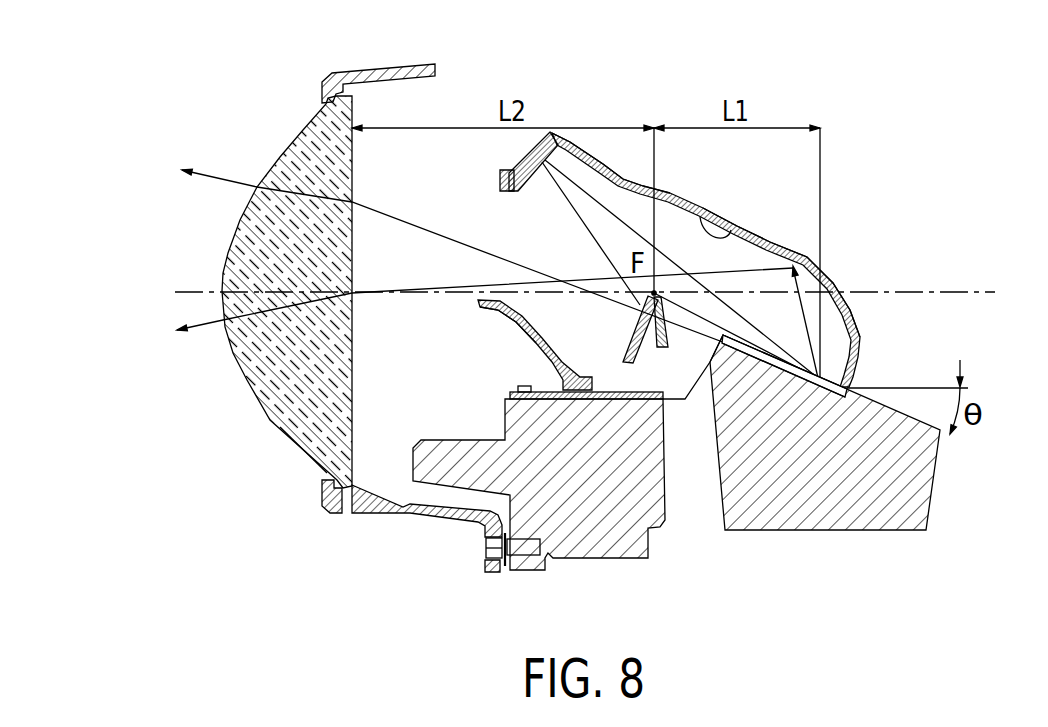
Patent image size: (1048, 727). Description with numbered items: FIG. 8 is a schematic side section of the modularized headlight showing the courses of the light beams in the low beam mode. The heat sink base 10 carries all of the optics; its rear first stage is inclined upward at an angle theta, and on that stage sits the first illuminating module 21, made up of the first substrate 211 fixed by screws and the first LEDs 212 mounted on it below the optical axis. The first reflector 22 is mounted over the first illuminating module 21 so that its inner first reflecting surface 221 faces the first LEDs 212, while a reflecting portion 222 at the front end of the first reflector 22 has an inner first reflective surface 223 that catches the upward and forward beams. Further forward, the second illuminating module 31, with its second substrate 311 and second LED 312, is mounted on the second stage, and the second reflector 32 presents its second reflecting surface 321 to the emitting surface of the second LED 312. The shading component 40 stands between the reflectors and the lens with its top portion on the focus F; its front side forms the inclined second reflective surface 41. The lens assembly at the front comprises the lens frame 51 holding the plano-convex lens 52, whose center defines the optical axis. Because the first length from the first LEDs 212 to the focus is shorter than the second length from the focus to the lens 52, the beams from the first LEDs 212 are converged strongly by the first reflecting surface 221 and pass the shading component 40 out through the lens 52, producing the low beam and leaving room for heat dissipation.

The heat sink base 10 is at (893, 525).
The first illuminating module 21 is at (834, 400).
The first substrate 211 is at (767, 372).
The first LEDs 212 is at (847, 387).
The first reflector 22 is at (828, 287).
The first reflecting surface 221 is at (745, 229).
The reflecting portion 222 is at (577, 146).
The first reflective surface 223 is at (530, 176).
The second illuminating module 31 is at (641, 400).
The second substrate 311 is at (606, 398).
The second LED 312 is at (503, 405).
The second reflector 32 is at (537, 331).
The second reflecting surface 321 is at (503, 314).
The shading component 40 is at (668, 330).
The second reflective surface 41 is at (632, 307).
The lens frame 51 is at (388, 70).
The lens 52 is at (270, 420).